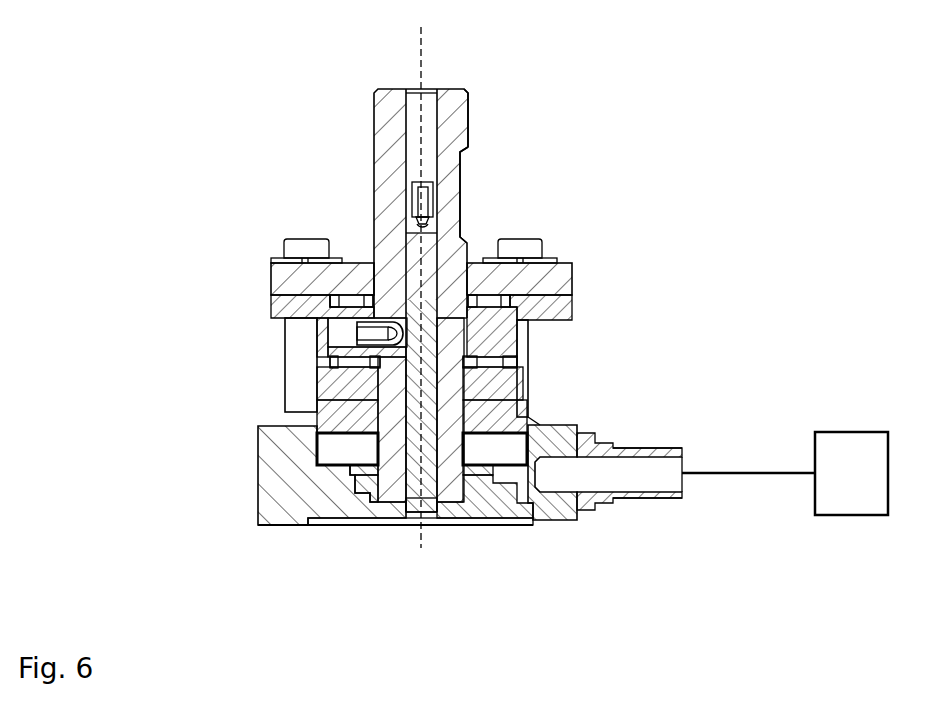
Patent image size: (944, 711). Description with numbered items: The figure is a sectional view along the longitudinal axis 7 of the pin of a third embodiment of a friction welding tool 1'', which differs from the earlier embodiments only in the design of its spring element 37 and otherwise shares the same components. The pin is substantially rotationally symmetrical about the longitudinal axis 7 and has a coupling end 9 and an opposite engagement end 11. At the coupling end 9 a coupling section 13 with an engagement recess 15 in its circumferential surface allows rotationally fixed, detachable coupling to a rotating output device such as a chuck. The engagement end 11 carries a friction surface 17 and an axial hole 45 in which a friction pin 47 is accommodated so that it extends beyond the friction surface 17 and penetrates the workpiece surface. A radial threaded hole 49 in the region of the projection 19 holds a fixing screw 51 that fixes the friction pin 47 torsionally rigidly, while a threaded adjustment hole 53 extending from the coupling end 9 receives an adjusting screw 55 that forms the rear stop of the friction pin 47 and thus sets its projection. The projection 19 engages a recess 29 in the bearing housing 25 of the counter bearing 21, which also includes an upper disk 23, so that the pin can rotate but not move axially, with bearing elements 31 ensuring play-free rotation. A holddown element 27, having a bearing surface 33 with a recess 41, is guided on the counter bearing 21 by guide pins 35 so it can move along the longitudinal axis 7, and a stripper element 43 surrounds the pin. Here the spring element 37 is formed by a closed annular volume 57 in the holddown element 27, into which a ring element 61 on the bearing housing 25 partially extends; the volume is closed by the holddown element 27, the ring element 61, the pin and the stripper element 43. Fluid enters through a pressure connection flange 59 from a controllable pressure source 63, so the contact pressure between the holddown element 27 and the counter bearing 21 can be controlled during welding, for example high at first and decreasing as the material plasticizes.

The friction welding tool 1'' is at (126, 122).
The longitudinal axis 7 is at (421, 58).
The coupling end 9 is at (450, 98).
The engagement end 11 is at (450, 483).
The coupling section 13 is at (388, 122).
The engagement recess 15 is at (460, 203).
The friction surface 17 is at (398, 502).
The projection 19 is at (503, 340).
The counter bearing 21 is at (598, 396).
The upper disk 23 is at (566, 277).
The bearing housing 25 is at (567, 305).
The holddown element 27 is at (287, 495).
The recess 29 is at (512, 362).
The bearing elements 31 is at (357, 298).
The bearing surface 33 is at (277, 525).
The guide pins 35 is at (307, 348).
The spring element 37 is at (347, 442).
The recess 41 is at (333, 520).
The stripper element 43 is at (472, 485).
The hole 45 is at (405, 478).
The friction pin 47 is at (432, 473).
The threaded hole 49 is at (373, 330).
The fixing screw 51 is at (342, 328).
The threaded adjustment hole 53 is at (420, 193).
The adjusting screw 55 is at (427, 133).
The annular volume 57 is at (321, 446).
The pressure connection flange 59 is at (628, 495).
The ring element 61 is at (357, 412).
The controllable pressure source 63 is at (838, 489).